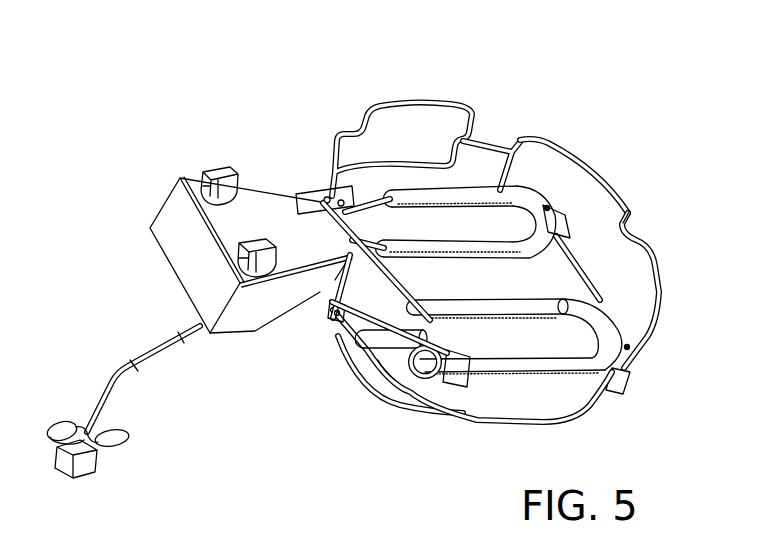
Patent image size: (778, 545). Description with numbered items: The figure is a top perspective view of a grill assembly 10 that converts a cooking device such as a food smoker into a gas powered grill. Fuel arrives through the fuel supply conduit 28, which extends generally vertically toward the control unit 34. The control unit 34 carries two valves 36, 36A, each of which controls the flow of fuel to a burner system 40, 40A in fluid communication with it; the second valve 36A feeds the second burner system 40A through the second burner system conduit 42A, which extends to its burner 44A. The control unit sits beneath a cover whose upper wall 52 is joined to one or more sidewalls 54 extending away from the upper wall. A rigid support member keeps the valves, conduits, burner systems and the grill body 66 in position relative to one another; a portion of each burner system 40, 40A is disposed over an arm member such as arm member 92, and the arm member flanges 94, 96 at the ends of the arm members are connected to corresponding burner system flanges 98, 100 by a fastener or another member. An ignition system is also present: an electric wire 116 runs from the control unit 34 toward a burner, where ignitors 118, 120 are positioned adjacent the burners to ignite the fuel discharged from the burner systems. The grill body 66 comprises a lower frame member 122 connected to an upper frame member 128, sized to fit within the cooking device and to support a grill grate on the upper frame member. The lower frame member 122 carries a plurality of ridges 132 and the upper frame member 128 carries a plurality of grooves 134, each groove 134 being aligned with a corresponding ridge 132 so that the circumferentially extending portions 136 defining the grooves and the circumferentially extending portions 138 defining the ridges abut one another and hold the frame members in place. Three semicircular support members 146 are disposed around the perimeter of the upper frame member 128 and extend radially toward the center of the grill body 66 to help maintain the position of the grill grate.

The grill assembly 10 is at (86, 60).
The fuel supply conduit 28 is at (160, 357).
The control unit 34 is at (233, 323).
The first valve 36 is at (206, 172).
The second valve 36A is at (305, 292).
The first burner system 40 is at (474, 188).
The second burner system 40A is at (630, 337).
The second burner system conduit 42A is at (340, 347).
The burner 44A is at (452, 378).
The upper wall 52 is at (254, 203).
The sidewall 54 is at (165, 230).
The grill body 66 is at (592, 168).
The arm member 92 is at (398, 358).
The arm member flange 94 is at (323, 193).
The arm member flange 96 is at (410, 368).
The burner system flange 98 is at (300, 192).
The burner system flange 100 is at (386, 378).
The electric wire 116 is at (333, 330).
The ignitor 118 is at (380, 238).
The ignitor 120 is at (434, 357).
The lower frame member 122 is at (580, 418).
The upper frame member 128 is at (630, 207).
The ridge 132 is at (548, 204).
The groove 134 is at (552, 140).
The circumferentially extending portion 136 is at (509, 150).
The circumferentially extending portion 138 is at (446, 155).
The support member 146 is at (356, 128).